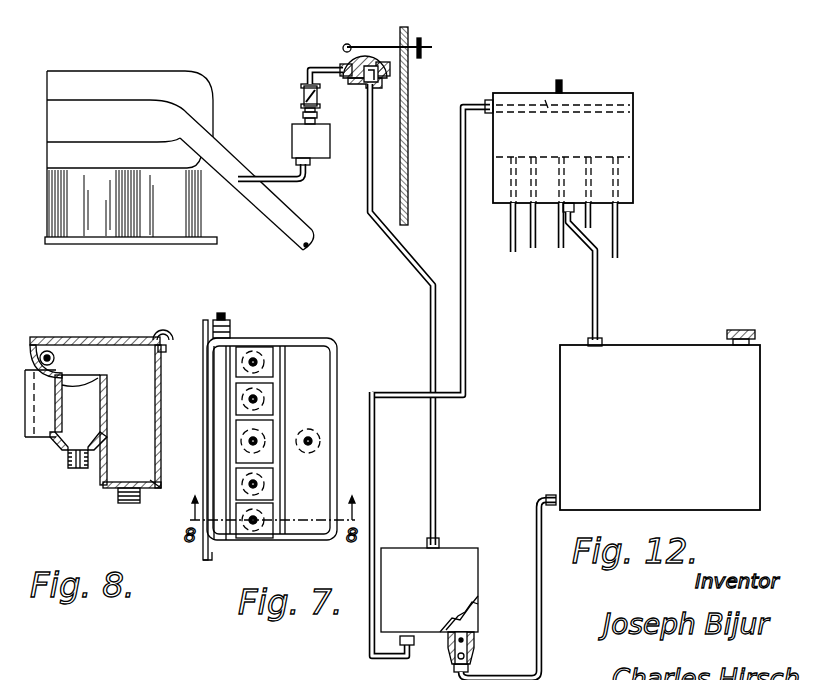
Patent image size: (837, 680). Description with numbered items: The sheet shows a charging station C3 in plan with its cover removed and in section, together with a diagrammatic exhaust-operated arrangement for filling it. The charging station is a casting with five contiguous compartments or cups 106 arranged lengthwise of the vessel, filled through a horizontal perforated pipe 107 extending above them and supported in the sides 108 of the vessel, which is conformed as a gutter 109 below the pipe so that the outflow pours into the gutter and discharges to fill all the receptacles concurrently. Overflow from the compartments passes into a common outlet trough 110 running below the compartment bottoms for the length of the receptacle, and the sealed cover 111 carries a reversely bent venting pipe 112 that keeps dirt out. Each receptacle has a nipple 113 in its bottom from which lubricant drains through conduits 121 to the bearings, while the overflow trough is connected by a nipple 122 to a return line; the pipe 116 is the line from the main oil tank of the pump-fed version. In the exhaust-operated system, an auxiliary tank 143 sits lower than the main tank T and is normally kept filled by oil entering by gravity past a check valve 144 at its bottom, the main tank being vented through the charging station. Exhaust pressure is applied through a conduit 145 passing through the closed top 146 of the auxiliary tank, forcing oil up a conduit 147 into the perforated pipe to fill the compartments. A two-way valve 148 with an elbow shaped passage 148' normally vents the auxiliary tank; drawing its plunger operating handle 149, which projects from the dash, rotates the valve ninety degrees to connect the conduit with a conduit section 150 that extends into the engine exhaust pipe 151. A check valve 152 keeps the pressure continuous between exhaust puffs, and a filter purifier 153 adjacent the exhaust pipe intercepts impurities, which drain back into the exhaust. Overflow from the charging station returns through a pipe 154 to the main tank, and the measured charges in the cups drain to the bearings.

In FIG. 12, the compartments or cups 106 is at (632, 186).
In FIG. 8, the compartments or cups 106 is at (60, 425).
In FIG. 7, the compartments or cups 106 is at (259, 354).
In FIG. 12, the horizontal perforated pipe 107 is at (511, 108).
In FIG. 8, the horizontal perforated pipe 107 is at (53, 350).
In FIG. 7, the horizontal perforated pipe 107 is at (224, 436).
In FIG. 7, the sides of the vessel 108 is at (241, 340).
In FIG. 8, the gutter 109 is at (60, 370).
In FIG. 8, the common outlet trough 110 is at (156, 490).
In FIG. 8, the sealed cover 111 is at (133, 336).
In FIG. 12, the venting pipe 112 is at (563, 90).
In FIG. 8, the venting pipe 112 is at (167, 338).
In FIG. 8, the nipple 113 is at (75, 470).
In FIG. 12, the pipe 116 is at (623, 7).
In FIG. 12, the conduits 121 is at (538, 250).
In FIG. 8, the nipple 122 is at (133, 505).
In FIG. 12, the auxiliary tank 143 is at (460, 562).
In FIG. 12, the check valve 144 is at (465, 668).
In FIG. 12, the conduit 145 is at (436, 452).
In FIG. 12, the closed top 146 is at (407, 546).
In FIG. 12, the conduit 147 is at (466, 348).
In FIG. 12, the two-way valve 148 is at (381, 44).
In FIG. 12, the elbow shaped passage 148' is at (414, 85).
In FIG. 12, the plunger operating handle 149 is at (433, 47).
In FIG. 12, the conduit section 150 is at (303, 180).
In FIG. 12, the engine exhaust pipe 151 is at (230, 155).
In FIG. 12, the check valve 152 is at (294, 92).
In FIG. 12, the filter purifier 153 is at (319, 130).
In FIG. 12, the pipe 154 is at (601, 291).
In FIG. 12, the charging station C3 is at (630, 107).
In FIG. 8, the charging station C3 is at (146, 416).
In FIG. 12, the main tank T is at (746, 443).